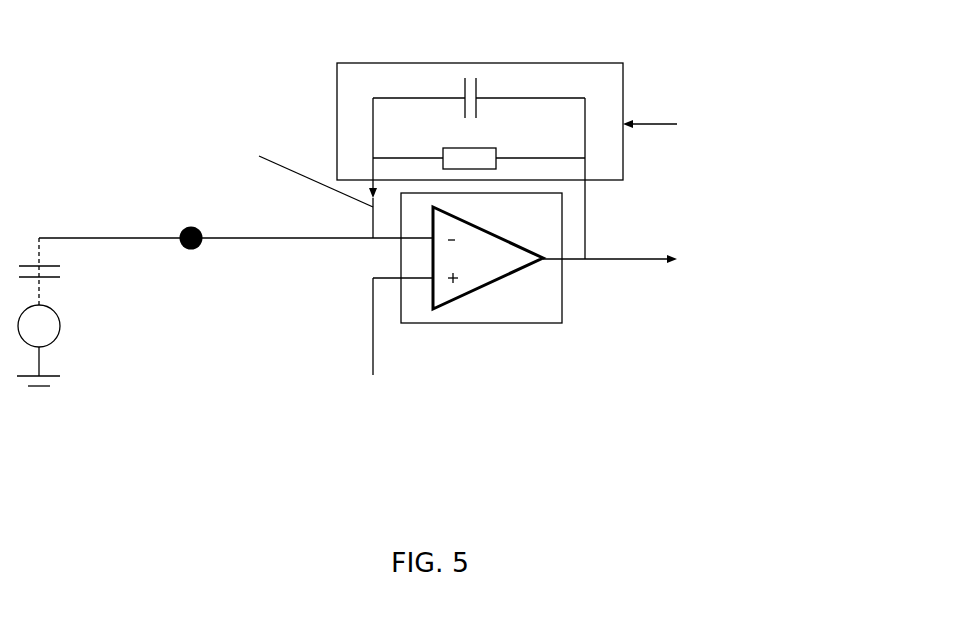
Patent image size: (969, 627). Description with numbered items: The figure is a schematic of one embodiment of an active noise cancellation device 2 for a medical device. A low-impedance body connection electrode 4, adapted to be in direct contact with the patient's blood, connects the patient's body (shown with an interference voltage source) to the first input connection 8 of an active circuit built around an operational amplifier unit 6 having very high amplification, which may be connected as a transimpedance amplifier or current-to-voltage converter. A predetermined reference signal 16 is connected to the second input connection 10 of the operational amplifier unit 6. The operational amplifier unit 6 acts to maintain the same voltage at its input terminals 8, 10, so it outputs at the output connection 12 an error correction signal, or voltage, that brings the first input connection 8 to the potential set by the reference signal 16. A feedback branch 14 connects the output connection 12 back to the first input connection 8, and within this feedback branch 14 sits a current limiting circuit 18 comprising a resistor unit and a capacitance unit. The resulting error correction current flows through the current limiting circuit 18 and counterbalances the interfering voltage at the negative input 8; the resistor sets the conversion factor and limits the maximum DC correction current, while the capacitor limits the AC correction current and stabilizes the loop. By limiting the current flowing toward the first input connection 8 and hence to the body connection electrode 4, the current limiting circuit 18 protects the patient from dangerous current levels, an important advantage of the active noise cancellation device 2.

The active noise cancellation device 2 is at (692, 49).
The body connection electrode 4 is at (203, 245).
The operational amplifier unit 6 is at (481, 258).
The first input connection 8 is at (236, 218).
The second input connection 10 is at (403, 268).
The output connection 12 is at (610, 270).
The feedback branch 14 is at (587, 197).
The reference signal 16 is at (386, 328).
The current limiting circuit 18 is at (480, 130).